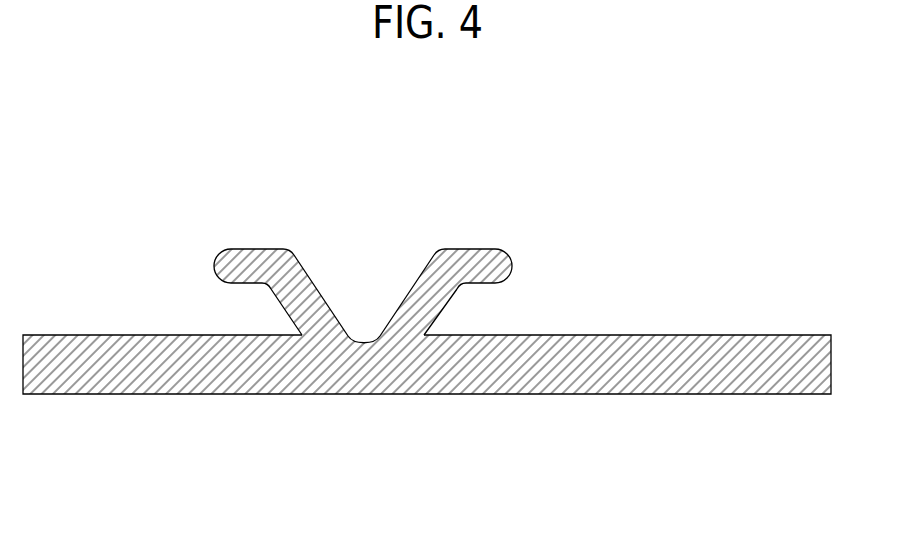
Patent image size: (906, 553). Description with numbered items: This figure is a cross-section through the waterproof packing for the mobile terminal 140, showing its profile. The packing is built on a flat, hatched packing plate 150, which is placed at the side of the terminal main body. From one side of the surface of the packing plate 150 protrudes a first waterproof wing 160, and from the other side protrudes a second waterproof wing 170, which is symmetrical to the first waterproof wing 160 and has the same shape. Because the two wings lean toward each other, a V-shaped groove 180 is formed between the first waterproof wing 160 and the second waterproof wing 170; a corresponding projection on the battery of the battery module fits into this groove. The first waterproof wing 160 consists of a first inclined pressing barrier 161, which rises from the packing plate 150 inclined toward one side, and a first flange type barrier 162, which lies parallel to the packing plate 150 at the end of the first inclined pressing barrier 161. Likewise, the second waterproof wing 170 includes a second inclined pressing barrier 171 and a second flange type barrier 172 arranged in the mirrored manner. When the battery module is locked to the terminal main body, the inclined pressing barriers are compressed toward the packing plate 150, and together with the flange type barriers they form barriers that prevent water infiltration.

The waterproof packing 140 is at (427, 274).
The packing plate 150 is at (743, 385).
The first waterproof wing 160 is at (514, 292).
The first inclined pressing barrier 161 is at (428, 302).
The first flange type barrier 162 is at (508, 262).
The second waterproof wing 170 is at (212, 292).
The second inclined pressing barrier 171 is at (298, 302).
The second flange type barrier 172 is at (217, 262).
The V-shaped groove 180 is at (374, 277).